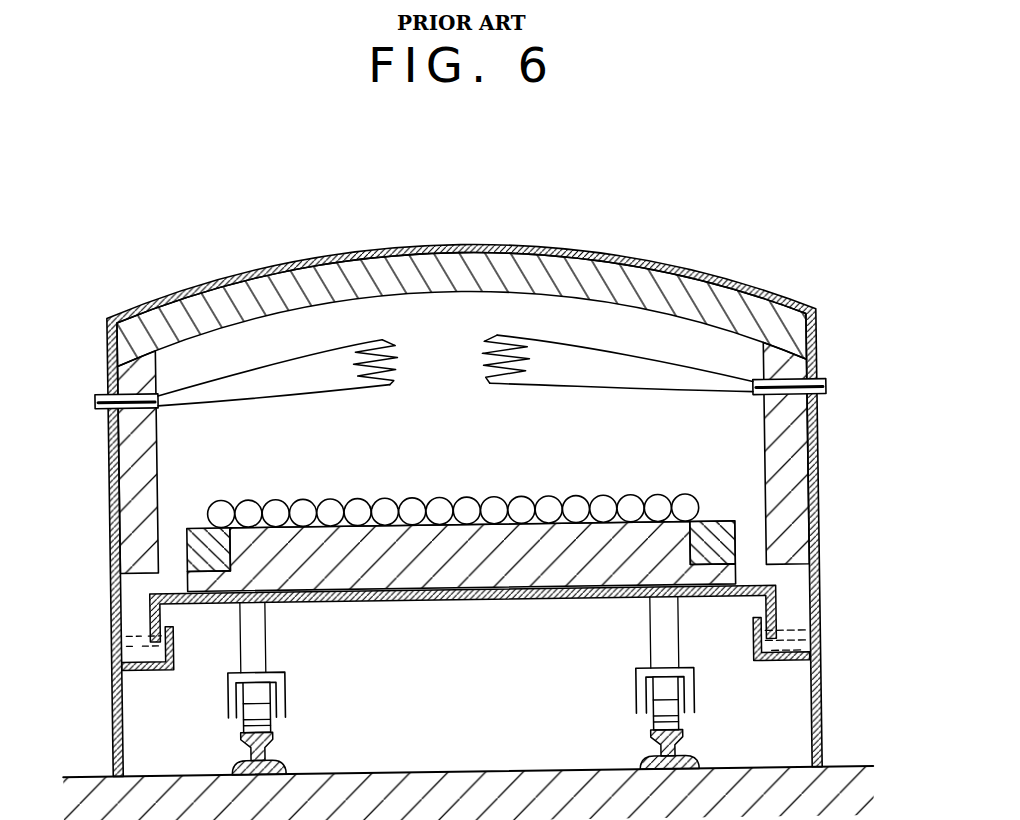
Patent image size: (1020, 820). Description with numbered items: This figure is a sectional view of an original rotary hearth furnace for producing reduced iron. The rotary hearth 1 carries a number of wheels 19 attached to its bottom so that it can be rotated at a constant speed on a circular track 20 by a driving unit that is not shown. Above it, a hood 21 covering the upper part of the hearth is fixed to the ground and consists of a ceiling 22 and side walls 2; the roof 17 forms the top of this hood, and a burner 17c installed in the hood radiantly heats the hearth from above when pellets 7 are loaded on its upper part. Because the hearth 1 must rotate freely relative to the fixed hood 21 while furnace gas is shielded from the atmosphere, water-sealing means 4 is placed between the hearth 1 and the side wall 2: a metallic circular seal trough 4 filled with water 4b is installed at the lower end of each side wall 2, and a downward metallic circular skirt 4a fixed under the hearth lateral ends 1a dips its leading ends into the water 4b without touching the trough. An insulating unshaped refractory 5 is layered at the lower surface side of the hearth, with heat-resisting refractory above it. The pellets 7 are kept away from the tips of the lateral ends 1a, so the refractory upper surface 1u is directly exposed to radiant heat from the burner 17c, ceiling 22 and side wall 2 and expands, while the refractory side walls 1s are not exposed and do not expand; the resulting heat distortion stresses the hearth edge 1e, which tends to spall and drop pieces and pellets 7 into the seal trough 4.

The rotary hearth 1 is at (520, 524).
The hearth lateral ends 1a is at (199, 523).
The hearth edge 1e is at (737, 520).
The refractory side walls 1s is at (738, 556).
The refractory upper surface 1u is at (712, 521).
The side wall 2 is at (812, 422).
The water-sealing means 4 is at (506, 640).
The skirt 4a is at (778, 606).
The water 4b is at (792, 648).
The insulating unshaped refractory 5 is at (407, 562).
The pellets 7 is at (631, 498).
The furnace roof 17 is at (474, 244).
The burner 17c is at (116, 440).
The wheels 19 is at (664, 728).
The circular track 20 is at (676, 746).
The hood 21 is at (860, 247).
The ceiling 22 is at (745, 311).